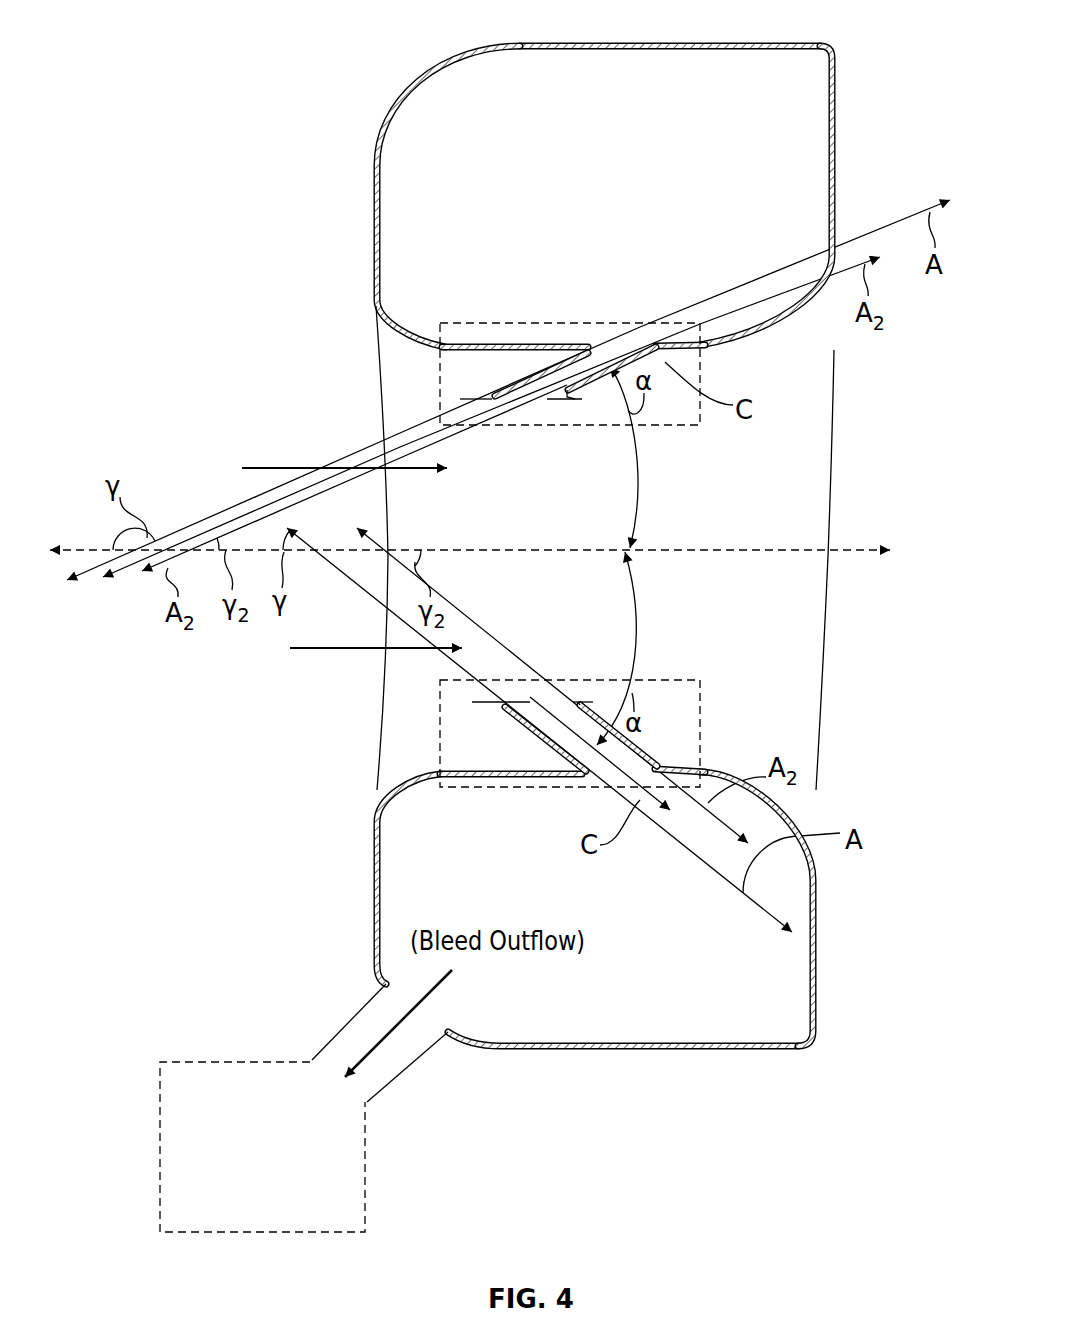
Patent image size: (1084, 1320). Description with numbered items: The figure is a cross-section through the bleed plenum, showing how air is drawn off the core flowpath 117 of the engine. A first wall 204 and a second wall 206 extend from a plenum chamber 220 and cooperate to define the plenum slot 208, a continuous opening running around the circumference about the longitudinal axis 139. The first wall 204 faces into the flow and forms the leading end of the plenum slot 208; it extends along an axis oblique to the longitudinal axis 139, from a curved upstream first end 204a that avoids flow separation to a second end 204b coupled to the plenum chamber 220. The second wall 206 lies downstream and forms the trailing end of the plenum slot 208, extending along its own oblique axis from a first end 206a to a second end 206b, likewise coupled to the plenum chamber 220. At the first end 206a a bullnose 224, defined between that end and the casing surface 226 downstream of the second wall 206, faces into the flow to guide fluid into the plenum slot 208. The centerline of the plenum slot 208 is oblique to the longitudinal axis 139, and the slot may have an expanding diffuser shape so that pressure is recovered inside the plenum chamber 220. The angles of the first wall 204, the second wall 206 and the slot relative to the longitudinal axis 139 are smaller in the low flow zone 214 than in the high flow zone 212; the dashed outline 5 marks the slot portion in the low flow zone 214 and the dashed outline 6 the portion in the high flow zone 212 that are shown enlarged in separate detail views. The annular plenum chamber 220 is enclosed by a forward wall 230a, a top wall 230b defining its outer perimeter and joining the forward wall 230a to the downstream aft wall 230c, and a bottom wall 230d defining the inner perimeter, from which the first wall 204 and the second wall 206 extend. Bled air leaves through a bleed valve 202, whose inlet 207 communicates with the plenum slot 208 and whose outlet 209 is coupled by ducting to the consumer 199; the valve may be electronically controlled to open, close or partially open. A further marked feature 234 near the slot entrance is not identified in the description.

The detail view region of upper slot 5 is at (462, 323).
The detail view region of lower slot 6 is at (703, 690).
The core flowpath 117 is at (264, 466).
The longitudinal axis 139 is at (738, 553).
The consumer 199 is at (288, 1163).
The bleed valve 202 is at (340, 1008).
The first wall 204 is at (512, 372).
The first end of first wall 204a is at (460, 400).
The second end of first wall 204b is at (591, 343).
The second wall 206 is at (677, 442).
The first end of second wall 206a is at (563, 404).
The second end of second wall 206b is at (653, 342).
The inlet 207 is at (427, 1023).
The plenum slot 208 is at (617, 330).
The outlet 209 is at (370, 1108).
The high flow zone 212 is at (284, 874).
The low flow zone 214 is at (298, 280).
The plenum chamber 220 is at (628, 189).
The bullnose 224 is at (583, 700).
The casing surface 226 is at (550, 408).
The forward wall 230a is at (376, 170).
The top wall 230b is at (660, 43).
The aft wall 230c is at (840, 145).
The bottom wall 230d is at (722, 345).
The slot throat 234 is at (547, 405).